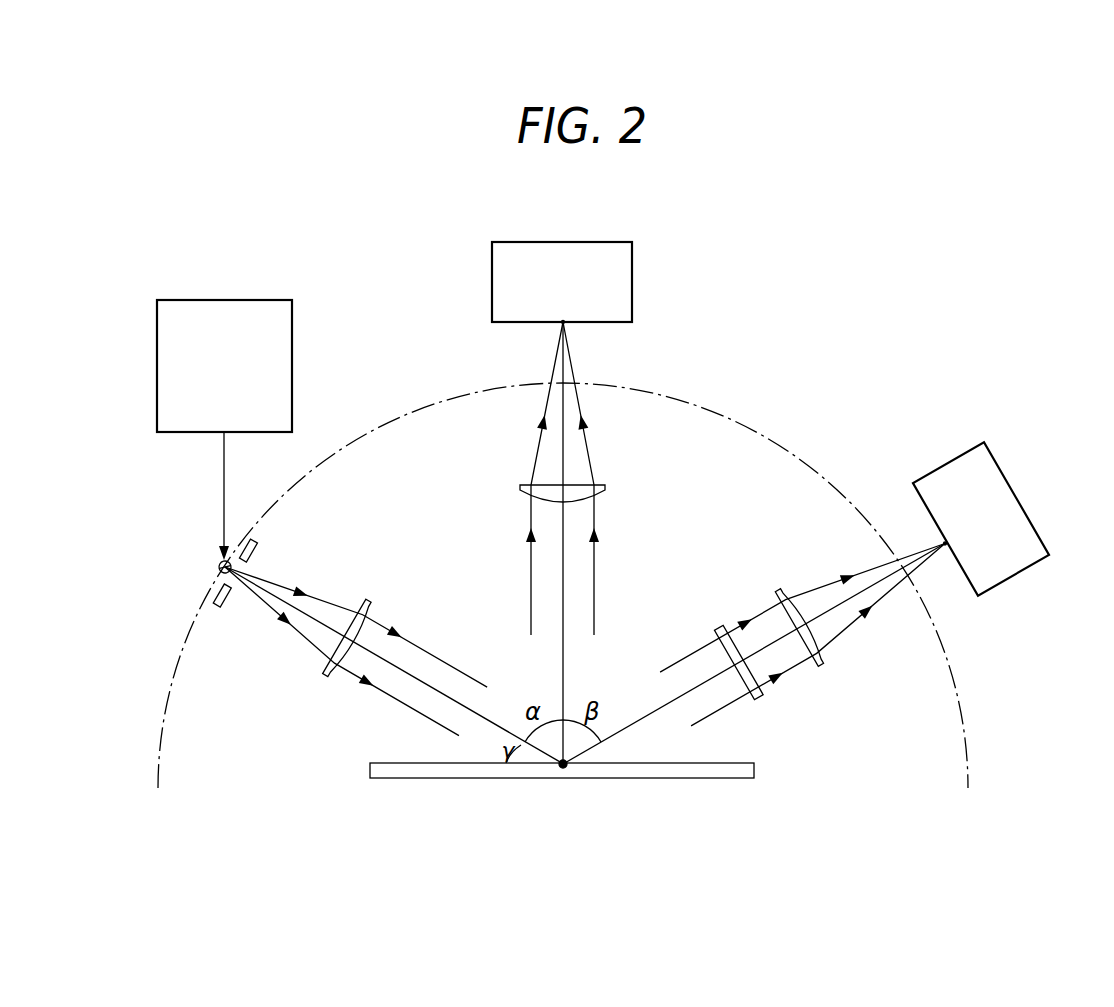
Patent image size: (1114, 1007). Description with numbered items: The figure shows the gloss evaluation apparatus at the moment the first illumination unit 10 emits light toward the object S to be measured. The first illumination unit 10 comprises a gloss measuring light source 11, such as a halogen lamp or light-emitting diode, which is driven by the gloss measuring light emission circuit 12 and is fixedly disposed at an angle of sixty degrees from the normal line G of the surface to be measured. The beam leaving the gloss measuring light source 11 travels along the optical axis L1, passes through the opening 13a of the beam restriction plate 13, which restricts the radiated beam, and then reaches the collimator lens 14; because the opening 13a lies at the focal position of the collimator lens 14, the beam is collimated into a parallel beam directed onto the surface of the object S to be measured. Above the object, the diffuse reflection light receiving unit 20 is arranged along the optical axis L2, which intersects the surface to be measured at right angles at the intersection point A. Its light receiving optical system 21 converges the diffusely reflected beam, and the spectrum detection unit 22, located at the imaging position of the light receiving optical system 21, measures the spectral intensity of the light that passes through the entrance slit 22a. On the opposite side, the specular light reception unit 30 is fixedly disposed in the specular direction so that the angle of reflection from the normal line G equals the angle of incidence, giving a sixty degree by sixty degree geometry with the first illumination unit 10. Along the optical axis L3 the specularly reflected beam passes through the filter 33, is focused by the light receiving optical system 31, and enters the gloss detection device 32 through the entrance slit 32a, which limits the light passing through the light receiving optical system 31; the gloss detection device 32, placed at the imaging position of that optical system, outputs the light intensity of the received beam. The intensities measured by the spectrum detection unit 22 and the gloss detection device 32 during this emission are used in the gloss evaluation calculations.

The first illumination unit 10 is at (110, 425).
The gloss measuring light source 11 is at (217, 561).
The gloss measuring light emission circuit 12 is at (262, 300).
The beam restriction plate 13 is at (258, 545).
The opening 13a is at (237, 593).
The collimator lens 14 is at (372, 602).
The diffuse reflection light receiving unit 20 is at (702, 296).
The light receiving optical system 21 is at (605, 490).
The spectrum detection unit 22 is at (632, 268).
The entrance slit 22a is at (565, 323).
The specular light reception unit 30 is at (1022, 612).
The light receiving optical system 31 is at (823, 655).
The gloss detection device 32 is at (1032, 512).
The entrance slit 32a is at (948, 552).
The filter 33 is at (760, 697).
The object to be measured S is at (500, 770).
The intersection point A is at (565, 770).
The optical axis L1 is at (408, 677).
The optical axis L2 is at (565, 582).
The optical axis L3 is at (697, 690).
The normal line G is at (562, 446).